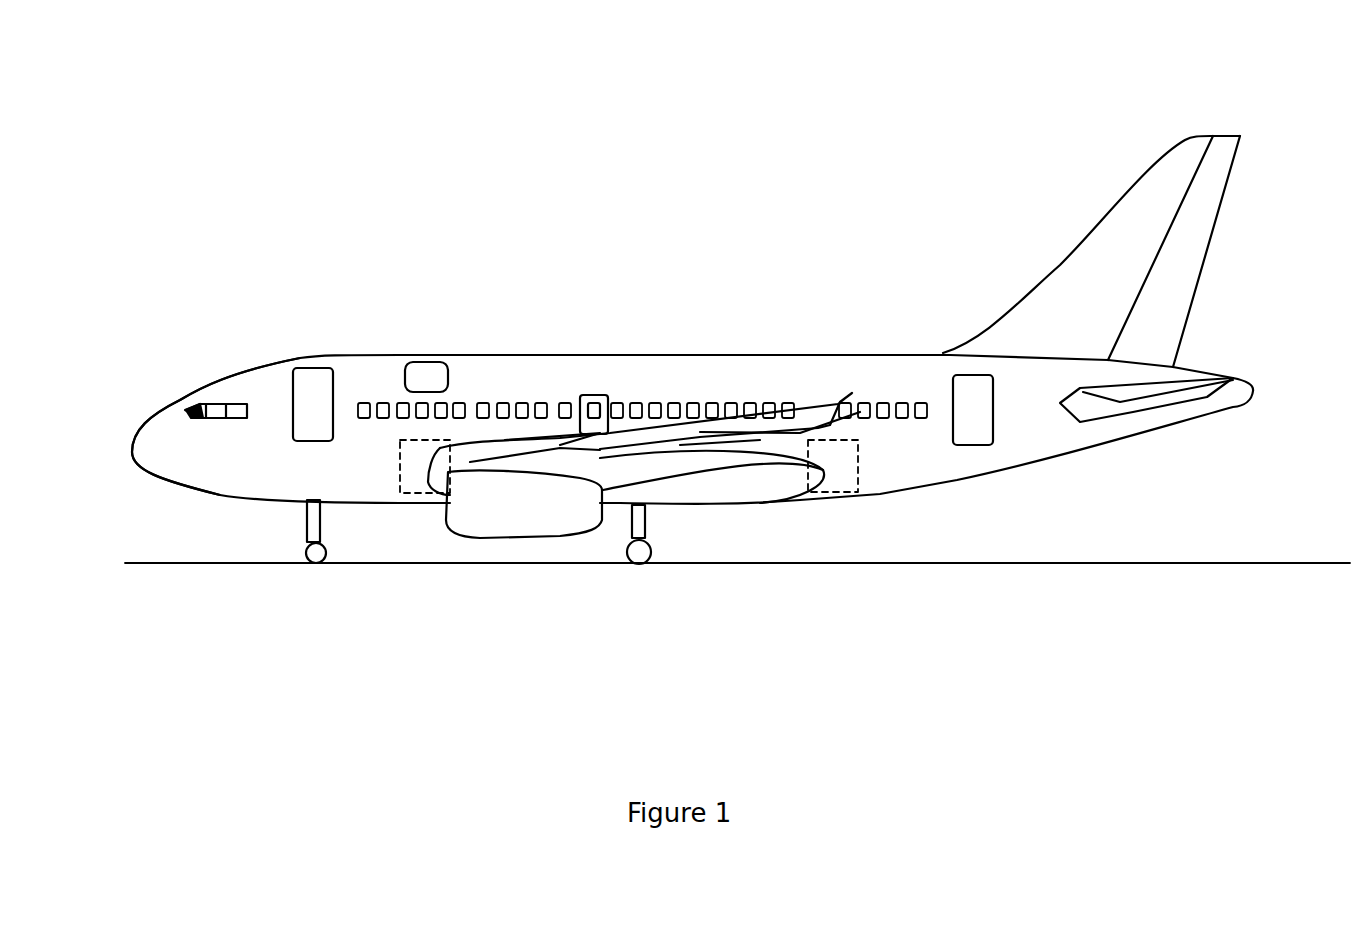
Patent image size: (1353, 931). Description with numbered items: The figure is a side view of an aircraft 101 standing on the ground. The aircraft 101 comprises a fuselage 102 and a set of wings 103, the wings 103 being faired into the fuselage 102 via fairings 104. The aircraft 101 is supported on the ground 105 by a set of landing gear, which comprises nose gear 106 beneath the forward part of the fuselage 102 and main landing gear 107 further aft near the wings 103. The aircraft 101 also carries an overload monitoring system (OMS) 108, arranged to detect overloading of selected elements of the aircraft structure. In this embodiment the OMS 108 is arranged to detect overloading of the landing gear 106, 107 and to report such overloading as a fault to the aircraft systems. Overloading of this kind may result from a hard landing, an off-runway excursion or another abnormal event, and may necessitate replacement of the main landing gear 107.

The aircraft 101 is at (450, 195).
The fuselage 102 is at (206, 490).
The set of wings 103 is at (765, 433).
The fairings 104 is at (648, 505).
The ground 105 is at (1050, 562).
The nose gear 106 is at (320, 533).
The main landing gear 107 is at (628, 522).
The overload monitoring system (OMS) 108 is at (450, 378).